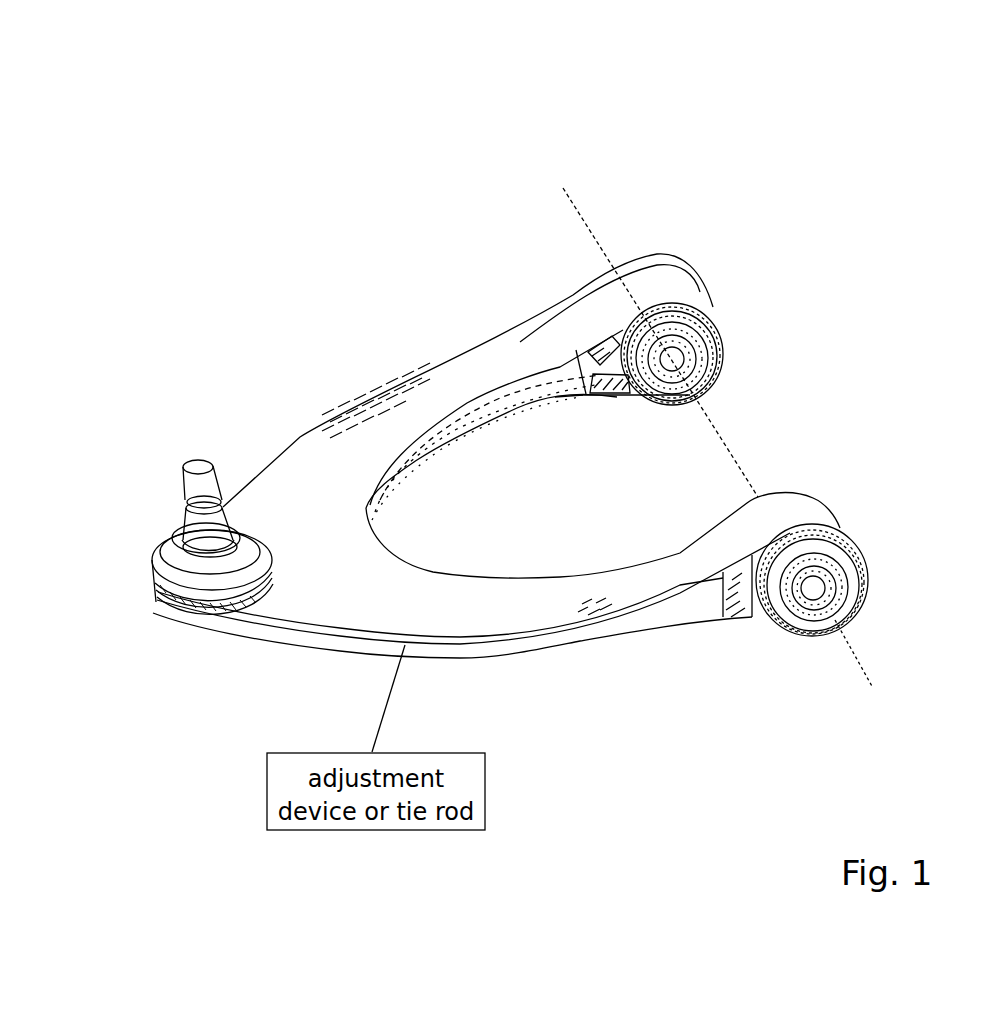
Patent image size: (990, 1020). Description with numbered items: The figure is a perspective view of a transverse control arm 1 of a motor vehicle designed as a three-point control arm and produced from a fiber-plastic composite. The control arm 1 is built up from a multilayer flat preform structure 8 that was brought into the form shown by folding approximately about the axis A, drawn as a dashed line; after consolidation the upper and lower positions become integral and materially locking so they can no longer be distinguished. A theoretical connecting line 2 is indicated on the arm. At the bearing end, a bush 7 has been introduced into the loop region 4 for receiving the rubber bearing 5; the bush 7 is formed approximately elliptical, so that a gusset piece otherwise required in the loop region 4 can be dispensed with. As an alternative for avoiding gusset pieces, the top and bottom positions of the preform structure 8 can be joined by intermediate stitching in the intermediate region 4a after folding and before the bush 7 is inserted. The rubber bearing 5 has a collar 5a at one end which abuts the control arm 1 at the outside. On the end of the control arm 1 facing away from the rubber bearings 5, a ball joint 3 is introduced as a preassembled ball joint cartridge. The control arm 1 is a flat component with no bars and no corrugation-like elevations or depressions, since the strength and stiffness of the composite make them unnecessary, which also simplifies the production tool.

The control arm 1 is at (405, 275).
The theoretical connecting line 2 is at (517, 405).
The ball joint 3 is at (232, 468).
The loop region 4 is at (550, 347).
The intermediate region 4a is at (585, 395).
The rubber bearing 5 is at (720, 345).
The collar 5a is at (830, 627).
The bush 7 is at (617, 397).
The preform structure 8 is at (637, 590).
The axis A is at (590, 218).